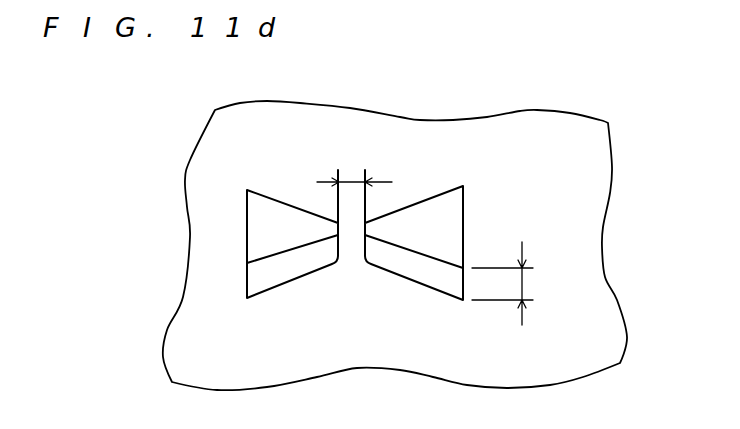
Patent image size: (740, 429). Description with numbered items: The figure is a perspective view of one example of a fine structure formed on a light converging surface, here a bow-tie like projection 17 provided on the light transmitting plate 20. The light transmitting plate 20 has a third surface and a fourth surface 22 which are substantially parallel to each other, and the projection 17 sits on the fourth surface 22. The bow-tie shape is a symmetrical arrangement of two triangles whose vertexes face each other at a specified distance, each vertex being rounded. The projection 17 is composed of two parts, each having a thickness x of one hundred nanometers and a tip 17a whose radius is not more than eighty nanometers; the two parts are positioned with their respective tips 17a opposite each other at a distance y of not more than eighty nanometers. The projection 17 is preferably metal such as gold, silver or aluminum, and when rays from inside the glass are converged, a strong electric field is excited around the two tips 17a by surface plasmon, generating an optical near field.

The bow-tie like projection 17 is at (265, 203).
The tip 17a is at (343, 247).
The light transmitting plate 20 is at (416, 219).
The fourth surface 22 is at (587, 178).